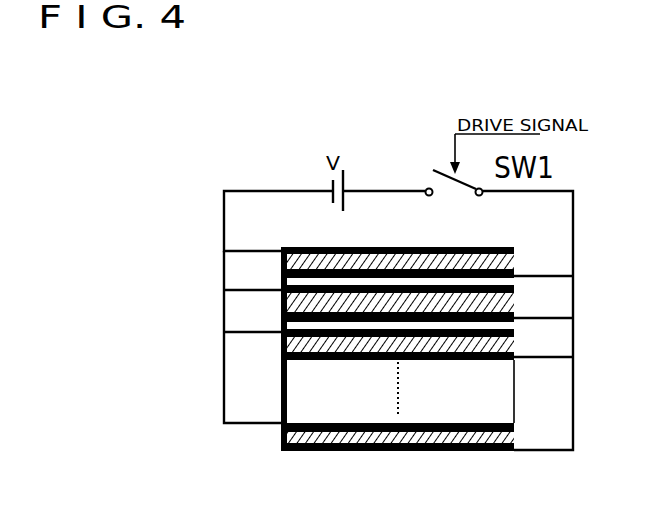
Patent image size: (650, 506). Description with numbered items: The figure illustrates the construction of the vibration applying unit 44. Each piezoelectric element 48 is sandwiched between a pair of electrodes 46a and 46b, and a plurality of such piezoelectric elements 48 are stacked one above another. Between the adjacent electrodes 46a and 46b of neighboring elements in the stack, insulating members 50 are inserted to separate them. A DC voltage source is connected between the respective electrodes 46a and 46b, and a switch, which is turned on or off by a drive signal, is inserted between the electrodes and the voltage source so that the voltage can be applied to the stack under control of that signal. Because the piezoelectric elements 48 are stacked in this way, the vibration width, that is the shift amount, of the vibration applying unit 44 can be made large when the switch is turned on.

The vibration applying unit 44 is at (168, 171).
The electrode 46a is at (516, 242).
The electrode 46b is at (516, 280).
The piezoelectric element 48 is at (279, 251).
The insulating member 50 is at (281, 282).